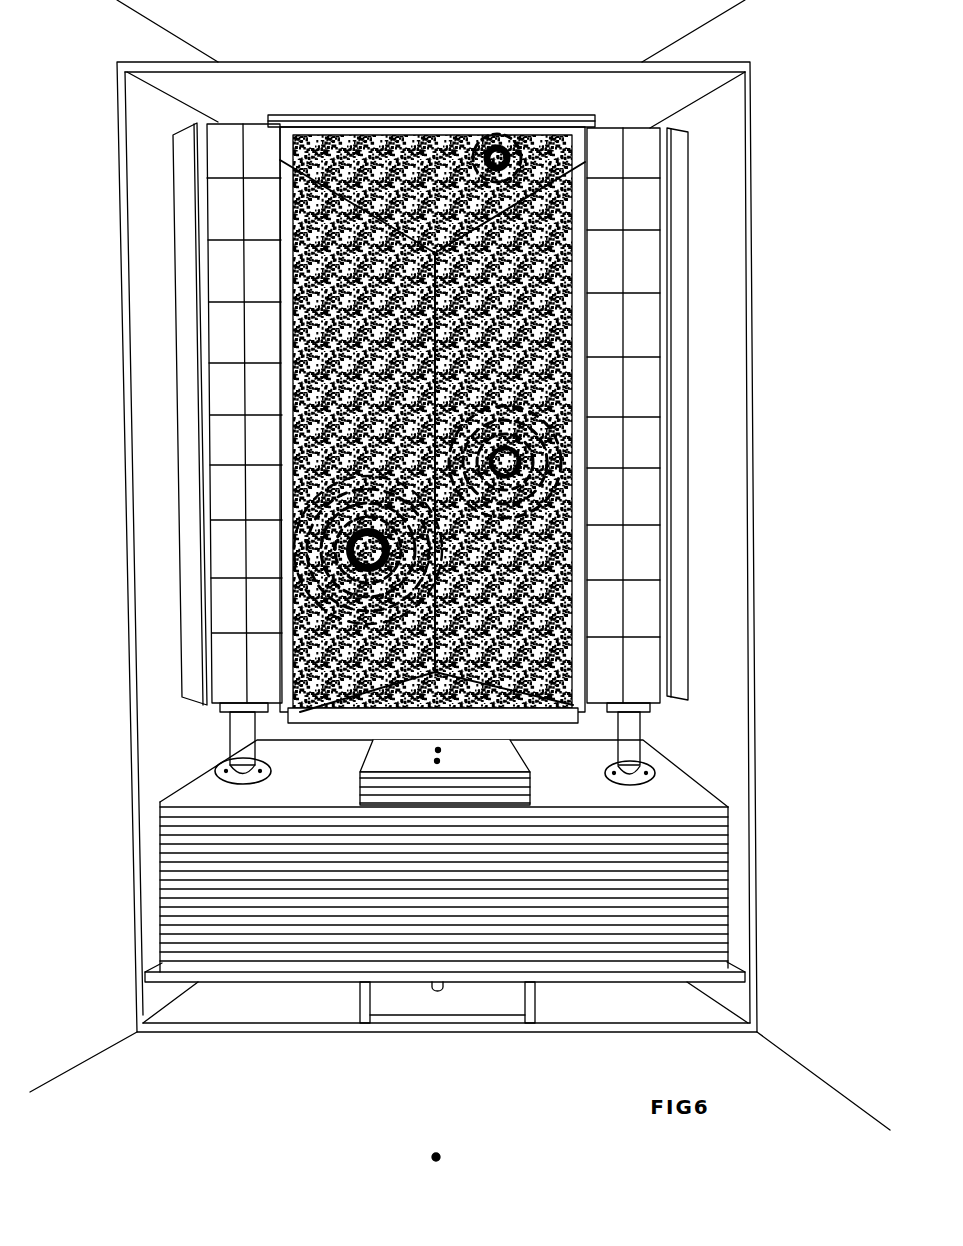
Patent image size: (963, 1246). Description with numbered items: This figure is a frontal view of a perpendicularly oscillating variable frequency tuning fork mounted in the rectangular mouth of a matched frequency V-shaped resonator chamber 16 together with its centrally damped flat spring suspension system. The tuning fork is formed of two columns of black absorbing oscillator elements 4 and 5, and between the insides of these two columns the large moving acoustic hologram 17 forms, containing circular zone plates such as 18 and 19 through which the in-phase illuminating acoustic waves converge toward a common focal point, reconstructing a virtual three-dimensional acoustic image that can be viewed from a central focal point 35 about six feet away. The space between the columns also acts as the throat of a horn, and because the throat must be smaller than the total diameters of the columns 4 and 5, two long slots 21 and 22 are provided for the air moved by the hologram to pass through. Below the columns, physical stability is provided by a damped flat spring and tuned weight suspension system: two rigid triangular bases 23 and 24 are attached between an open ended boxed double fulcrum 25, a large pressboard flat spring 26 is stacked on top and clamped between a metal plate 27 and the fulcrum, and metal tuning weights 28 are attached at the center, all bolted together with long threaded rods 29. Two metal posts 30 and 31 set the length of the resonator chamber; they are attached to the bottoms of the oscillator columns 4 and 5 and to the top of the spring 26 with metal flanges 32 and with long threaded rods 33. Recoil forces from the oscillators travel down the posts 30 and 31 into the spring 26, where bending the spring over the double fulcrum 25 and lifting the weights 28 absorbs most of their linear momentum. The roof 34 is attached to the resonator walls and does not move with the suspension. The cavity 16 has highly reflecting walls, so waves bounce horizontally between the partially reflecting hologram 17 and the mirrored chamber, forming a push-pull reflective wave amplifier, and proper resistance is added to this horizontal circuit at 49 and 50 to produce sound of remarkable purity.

The column of oscillator elements 4 is at (202, 718).
The column of oscillator elements 5 is at (658, 708).
The V-shaped resonator chamber 16 is at (755, 138).
The acoustic hologram 17 is at (356, 140).
The circular zone plate 18 is at (368, 550).
The circular zone plate 19 is at (505, 462).
The long slot 21 is at (190, 413).
The long slot 22 is at (680, 383).
The rigid triangular base 23 is at (145, 978).
The rigid triangular base 24 is at (137, 1027).
The open ended boxed double fulcrum 25 is at (537, 1007).
The flat spring 26 is at (187, 777).
The metal plate 27 is at (537, 802).
The metal tuning weights 28 is at (516, 750).
The long threaded rods 29 is at (435, 995).
The metal post 30 is at (227, 737).
The metal post 31 is at (665, 758).
The metal flanges 32 is at (642, 790).
The long threaded rods 33 is at (655, 778).
The roof 34 is at (438, 62).
The central focal point 35 is at (456, 1157).
The resistance in horizontal circuit 49 is at (290, 983).
The resistance in horizontal circuit 50 is at (666, 983).